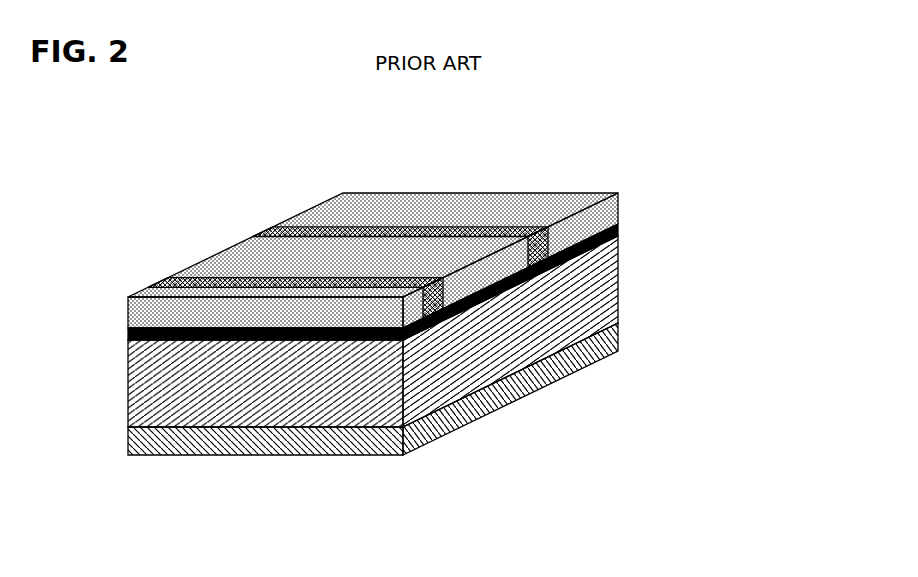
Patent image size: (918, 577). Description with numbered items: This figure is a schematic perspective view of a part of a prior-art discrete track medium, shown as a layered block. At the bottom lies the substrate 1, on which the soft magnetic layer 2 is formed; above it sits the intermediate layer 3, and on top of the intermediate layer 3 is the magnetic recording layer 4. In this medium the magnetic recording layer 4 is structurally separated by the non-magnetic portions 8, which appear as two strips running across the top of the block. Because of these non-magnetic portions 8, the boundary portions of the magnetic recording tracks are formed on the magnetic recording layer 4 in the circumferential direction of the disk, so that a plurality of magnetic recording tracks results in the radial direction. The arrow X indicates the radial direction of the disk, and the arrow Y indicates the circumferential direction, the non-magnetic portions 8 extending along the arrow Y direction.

The substrate 1 is at (578, 358).
The soft magnetic layer 2 is at (618, 267).
The intermediate layer 3 is at (618, 222).
The magnetic recording layer 4 is at (587, 223).
The non-magnetic portions 8 is at (213, 290).
The arrow X is at (248, 390).
The arrow Y is at (483, 368).